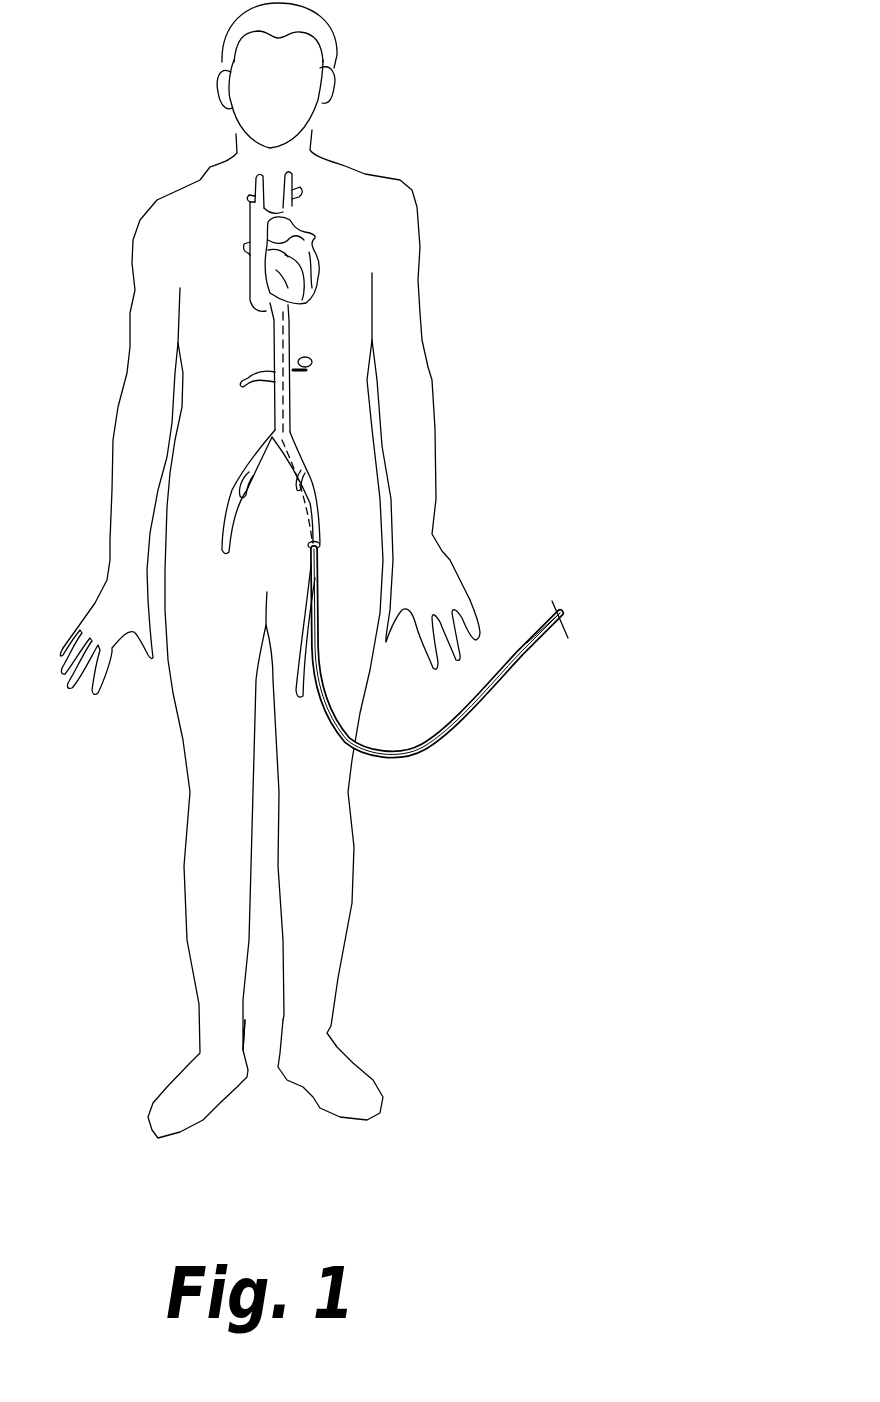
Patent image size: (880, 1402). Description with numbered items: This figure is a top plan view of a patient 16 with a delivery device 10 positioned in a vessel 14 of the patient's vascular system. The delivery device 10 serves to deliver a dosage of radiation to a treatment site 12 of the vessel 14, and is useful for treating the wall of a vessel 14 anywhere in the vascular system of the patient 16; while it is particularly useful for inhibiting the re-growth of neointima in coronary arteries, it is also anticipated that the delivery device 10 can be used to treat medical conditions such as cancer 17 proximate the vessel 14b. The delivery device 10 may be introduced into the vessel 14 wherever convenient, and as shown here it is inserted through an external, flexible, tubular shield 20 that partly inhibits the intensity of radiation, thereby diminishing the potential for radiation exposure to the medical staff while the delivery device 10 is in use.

The delivery device 10 is at (404, 760).
The treatment site 12 is at (322, 283).
The vessel 14 is at (309, 279).
The vessel 14b is at (305, 379).
The patient 16 is at (366, 146).
The cancer 17 is at (313, 357).
The tubular shield 20 is at (527, 643).